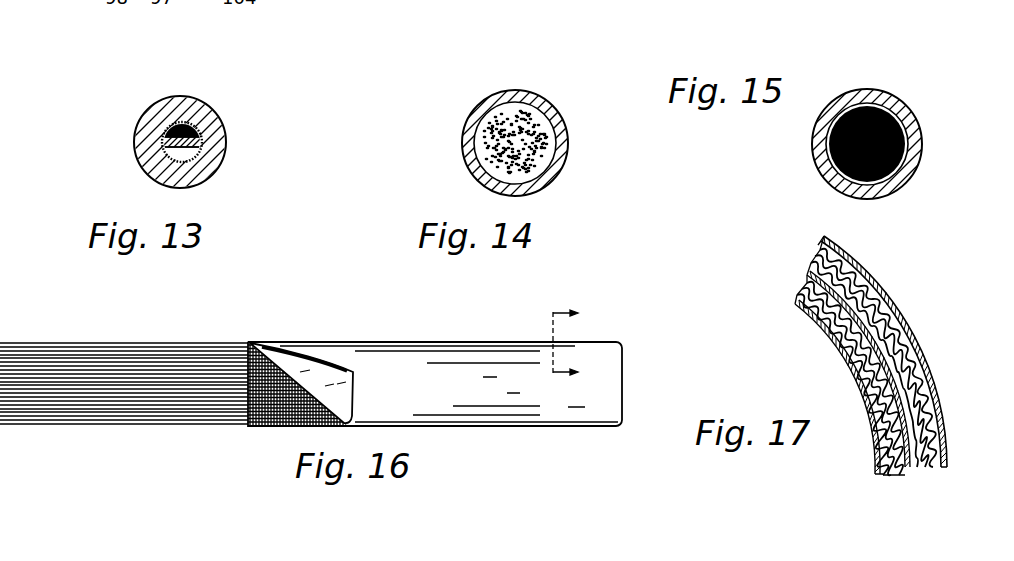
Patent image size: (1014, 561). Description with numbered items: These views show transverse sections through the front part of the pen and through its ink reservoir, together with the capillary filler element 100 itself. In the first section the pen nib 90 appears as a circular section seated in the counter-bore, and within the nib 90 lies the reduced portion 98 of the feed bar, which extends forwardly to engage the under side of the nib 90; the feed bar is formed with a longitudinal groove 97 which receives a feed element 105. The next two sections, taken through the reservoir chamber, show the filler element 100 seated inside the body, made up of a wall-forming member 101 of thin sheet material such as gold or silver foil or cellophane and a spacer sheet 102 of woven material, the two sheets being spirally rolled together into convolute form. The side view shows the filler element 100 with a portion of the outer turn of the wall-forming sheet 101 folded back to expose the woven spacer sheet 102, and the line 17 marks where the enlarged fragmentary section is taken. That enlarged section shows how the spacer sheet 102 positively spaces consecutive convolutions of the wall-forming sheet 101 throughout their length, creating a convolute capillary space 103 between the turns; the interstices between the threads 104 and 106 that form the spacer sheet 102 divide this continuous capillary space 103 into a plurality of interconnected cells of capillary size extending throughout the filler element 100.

In FIG. 13, the pen nib 90 is at (147, 158).
In FIG. 13, the groove 97 is at (196, 122).
In FIG. 13, the reduced portion 98 is at (166, 131).
In FIG. 13, the feed element 105 is at (204, 143).
In FIG. 14, the threads 104 is at (534, 117).
In FIG. 16, the threads 104 is at (230, 422).
In FIG. 17, the threads 104 is at (968, 318).
In FIG. 15, the wall-forming member 101 is at (871, 104).
In FIG. 16, the wall-forming member 101 is at (334, 382).
In FIG. 17, the wall-forming member 101 is at (932, 377).
In FIG. 15, the spacer sheet 102 is at (907, 121).
In FIG. 17, the spacer sheet 102 is at (940, 403).
In FIG. 17, the capillary space 103 is at (920, 347).
In FIG. 16, the threads 106 is at (275, 420).
In FIG. 17, the threads 106 is at (946, 286).
In FIG. 16, the capillary filler element 100 is at (596, 405).
In FIG. 16, the section line 17— 17 is at (555, 345).